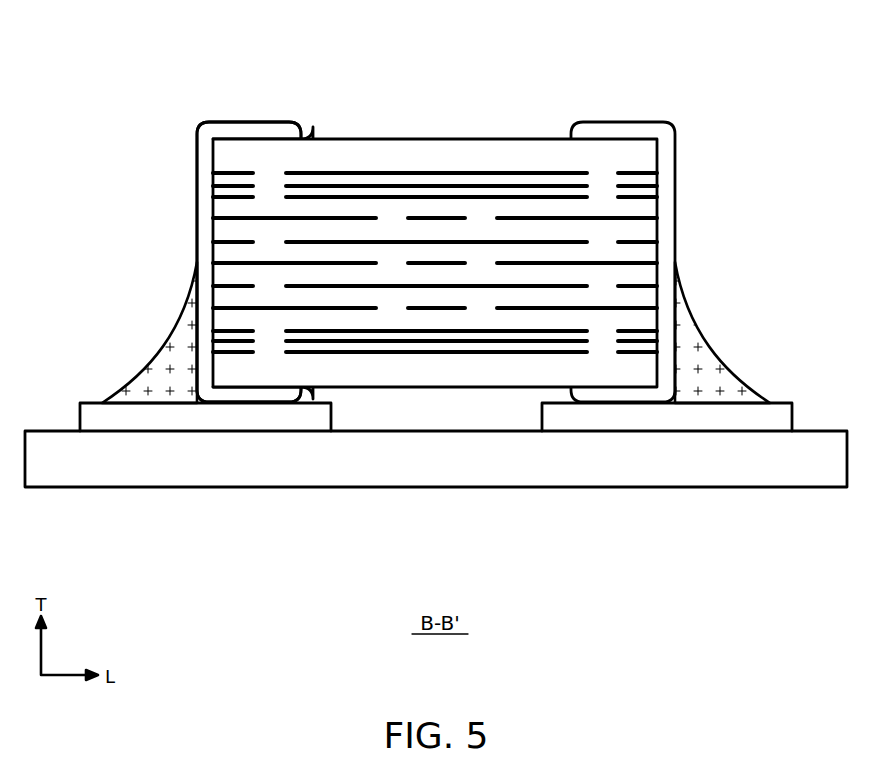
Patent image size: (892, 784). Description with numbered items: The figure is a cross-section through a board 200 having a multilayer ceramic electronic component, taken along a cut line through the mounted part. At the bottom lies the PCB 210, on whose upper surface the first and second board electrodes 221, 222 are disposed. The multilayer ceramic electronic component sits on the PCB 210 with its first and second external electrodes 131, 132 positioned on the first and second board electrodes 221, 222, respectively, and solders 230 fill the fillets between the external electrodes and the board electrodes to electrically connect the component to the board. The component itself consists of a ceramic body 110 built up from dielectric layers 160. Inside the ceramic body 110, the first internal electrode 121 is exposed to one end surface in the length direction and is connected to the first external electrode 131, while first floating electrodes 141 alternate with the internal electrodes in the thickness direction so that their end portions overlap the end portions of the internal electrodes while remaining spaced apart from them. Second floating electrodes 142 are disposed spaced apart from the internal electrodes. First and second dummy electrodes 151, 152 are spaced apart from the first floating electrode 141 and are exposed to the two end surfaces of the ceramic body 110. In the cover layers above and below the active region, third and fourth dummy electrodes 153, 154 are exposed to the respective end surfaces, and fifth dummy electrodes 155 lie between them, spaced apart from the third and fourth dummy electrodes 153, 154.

The board having a multilayer ceramic electronic component 200 is at (270, 54).
The ceramic body 110 is at (430, 139).
The first internal electrode 121 is at (250, 220).
The first external electrode 131 is at (235, 128).
The second external electrode 132 is at (637, 128).
The first floating electrode 141 is at (348, 287).
The second floating electrode 142 is at (447, 312).
The first dummy electrode 151 is at (245, 245).
The second dummy electrode 152 is at (640, 285).
The third dummy electrode 153 is at (225, 198).
The fourth dummy electrode 154 is at (645, 333).
The fifth dummy electrode 155 is at (523, 348).
The dielectric layers 160 is at (643, 253).
The PCB 210 is at (290, 473).
The first board electrode 221 is at (198, 420).
The second board electrode 222 is at (672, 420).
The solder 230 is at (157, 357).